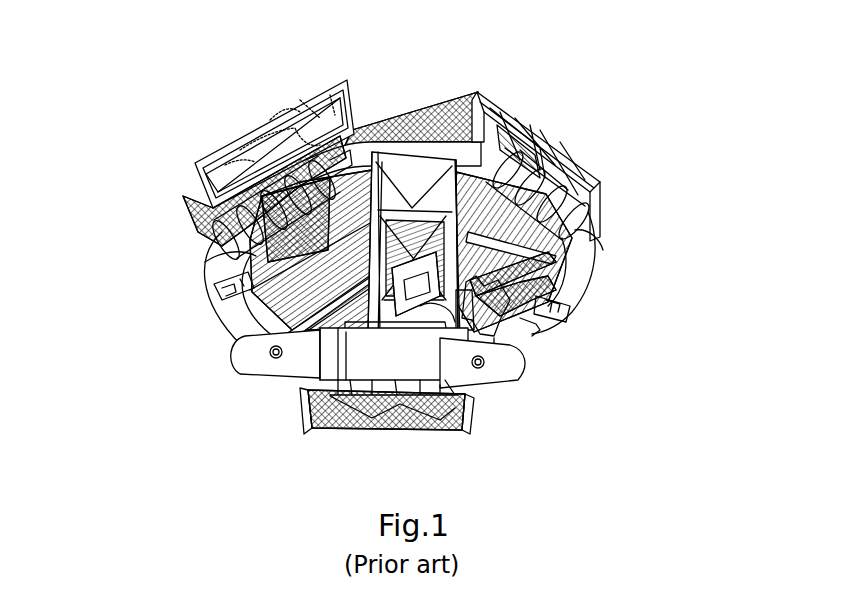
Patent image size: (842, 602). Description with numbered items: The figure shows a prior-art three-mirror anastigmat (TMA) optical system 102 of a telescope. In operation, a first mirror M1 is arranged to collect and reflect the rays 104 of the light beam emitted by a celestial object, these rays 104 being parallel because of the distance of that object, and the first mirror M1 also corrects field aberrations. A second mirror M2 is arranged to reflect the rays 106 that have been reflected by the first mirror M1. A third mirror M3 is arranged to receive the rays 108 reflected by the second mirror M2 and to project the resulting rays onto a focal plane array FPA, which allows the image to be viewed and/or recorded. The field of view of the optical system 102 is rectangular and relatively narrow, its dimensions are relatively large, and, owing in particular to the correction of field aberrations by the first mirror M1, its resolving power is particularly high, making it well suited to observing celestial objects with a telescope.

The TMA optical system 102 is at (128, 168).
The rays 104 is at (409, 122).
The rays 106 is at (196, 236).
The rays 108 is at (556, 243).
The first mirror M1 is at (540, 130).
The second mirror M2 is at (240, 300).
The third mirror M3 is at (603, 224).
The focal plane array FPA is at (413, 398).